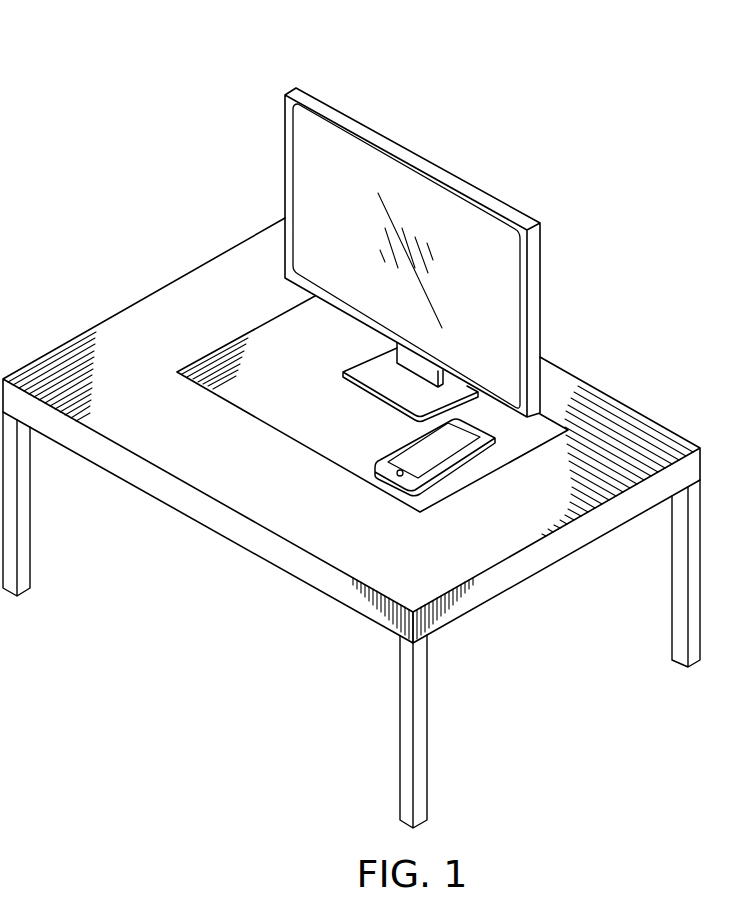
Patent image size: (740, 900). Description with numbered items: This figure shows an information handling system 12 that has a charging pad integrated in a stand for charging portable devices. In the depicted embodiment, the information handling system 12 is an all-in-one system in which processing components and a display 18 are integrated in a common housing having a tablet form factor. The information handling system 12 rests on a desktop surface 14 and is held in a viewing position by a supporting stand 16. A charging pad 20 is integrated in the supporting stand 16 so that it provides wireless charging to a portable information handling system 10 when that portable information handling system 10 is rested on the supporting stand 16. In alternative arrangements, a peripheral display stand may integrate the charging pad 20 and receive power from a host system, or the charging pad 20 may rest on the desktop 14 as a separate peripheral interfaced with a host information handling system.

The portable information handling system 10 is at (515, 573).
The information handling system 12 is at (367, 326).
The desktop surface 14 is at (351, 523).
The supporting stand 16 is at (280, 492).
The display 18 is at (468, 252).
The charging pad 20 is at (353, 316).